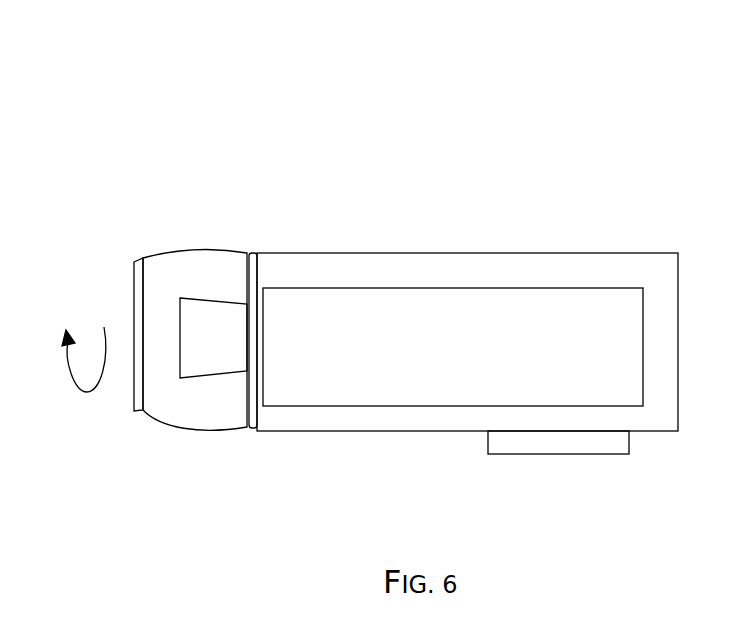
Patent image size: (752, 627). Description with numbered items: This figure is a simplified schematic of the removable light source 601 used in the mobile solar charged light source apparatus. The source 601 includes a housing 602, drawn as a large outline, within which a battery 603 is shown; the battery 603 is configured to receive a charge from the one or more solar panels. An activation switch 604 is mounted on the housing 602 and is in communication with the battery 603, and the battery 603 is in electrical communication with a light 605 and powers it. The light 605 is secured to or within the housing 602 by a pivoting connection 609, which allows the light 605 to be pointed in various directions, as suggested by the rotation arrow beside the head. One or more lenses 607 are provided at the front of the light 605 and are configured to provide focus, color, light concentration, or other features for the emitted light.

The removable light source 601 is at (152, 74).
The housing 602 is at (560, 253).
The battery 603 is at (429, 288).
The activation switch 604 is at (583, 454).
The light 605 is at (217, 376).
The lenses 607 is at (134, 285).
The pivoting connection 609 is at (252, 253).